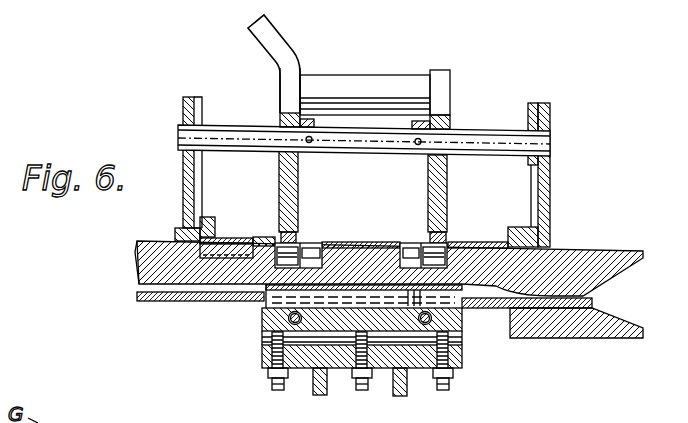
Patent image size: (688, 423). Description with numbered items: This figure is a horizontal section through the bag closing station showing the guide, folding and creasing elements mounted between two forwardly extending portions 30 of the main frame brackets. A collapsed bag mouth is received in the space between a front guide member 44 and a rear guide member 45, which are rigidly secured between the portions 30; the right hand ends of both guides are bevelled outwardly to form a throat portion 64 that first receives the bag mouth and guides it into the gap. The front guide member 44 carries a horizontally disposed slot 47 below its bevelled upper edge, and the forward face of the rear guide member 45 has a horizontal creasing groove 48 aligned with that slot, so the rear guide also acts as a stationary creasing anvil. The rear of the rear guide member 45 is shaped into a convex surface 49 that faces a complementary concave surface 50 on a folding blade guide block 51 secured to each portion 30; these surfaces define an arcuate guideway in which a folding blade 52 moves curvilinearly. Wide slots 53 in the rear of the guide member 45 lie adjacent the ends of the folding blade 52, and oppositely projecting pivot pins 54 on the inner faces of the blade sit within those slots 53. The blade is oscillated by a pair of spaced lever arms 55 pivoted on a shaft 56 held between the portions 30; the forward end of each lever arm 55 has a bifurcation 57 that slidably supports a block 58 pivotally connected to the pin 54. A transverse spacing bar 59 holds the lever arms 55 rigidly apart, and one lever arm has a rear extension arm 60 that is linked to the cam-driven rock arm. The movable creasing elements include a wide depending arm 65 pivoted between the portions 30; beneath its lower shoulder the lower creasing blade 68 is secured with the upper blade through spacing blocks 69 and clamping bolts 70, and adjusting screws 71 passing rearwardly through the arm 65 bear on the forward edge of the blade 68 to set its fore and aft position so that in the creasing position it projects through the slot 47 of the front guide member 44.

The forwardly extending portion 30 is at (197, 178).
The front guide member 44 is at (498, 308).
The rear guide member 45 is at (592, 253).
The horizontally disposed slot 47 is at (262, 300).
The horizontal creasing groove 48 is at (211, 284).
The convex surface 49 is at (228, 238).
The concave surface 50 is at (222, 220).
The folding blade guide block 51 is at (216, 221).
The folding blade 52 is at (360, 242).
The slot 53 is at (333, 243).
The pivot pin 54 is at (292, 238).
The lever arm 55 is at (288, 89).
The shaft 56 is at (356, 144).
The bifurcation 57 is at (422, 230).
The block 58 is at (280, 238).
The transverse spacing bar 59 is at (370, 64).
The rear extension arm 60 is at (280, 33).
The throat portion 64 is at (604, 301).
The depending arm 65 is at (402, 394).
The lower creasing blade 68 is at (461, 338).
The spacing block 69 is at (345, 322).
The clamping bolt 70 is at (297, 324).
The adjusting screw 71 is at (266, 388).